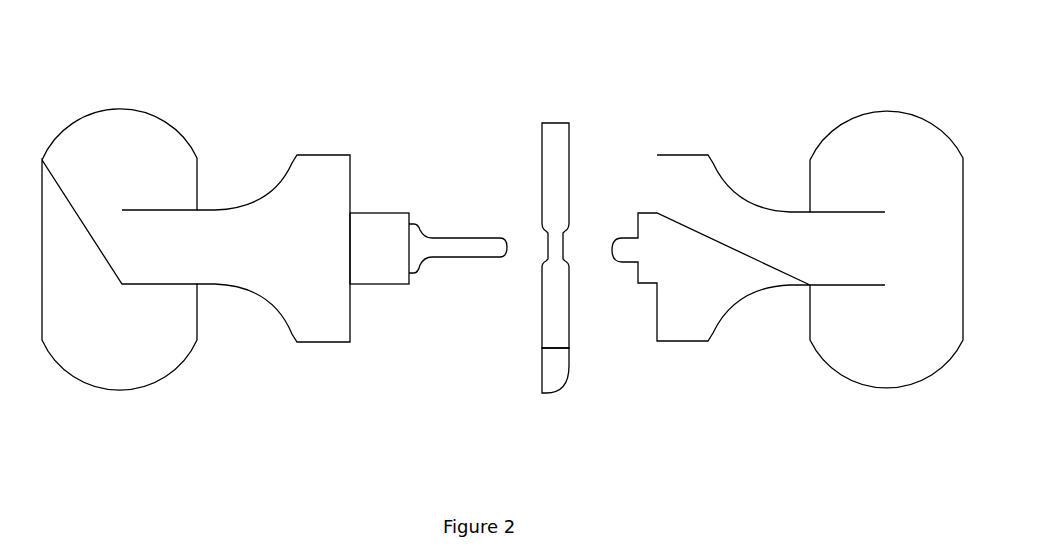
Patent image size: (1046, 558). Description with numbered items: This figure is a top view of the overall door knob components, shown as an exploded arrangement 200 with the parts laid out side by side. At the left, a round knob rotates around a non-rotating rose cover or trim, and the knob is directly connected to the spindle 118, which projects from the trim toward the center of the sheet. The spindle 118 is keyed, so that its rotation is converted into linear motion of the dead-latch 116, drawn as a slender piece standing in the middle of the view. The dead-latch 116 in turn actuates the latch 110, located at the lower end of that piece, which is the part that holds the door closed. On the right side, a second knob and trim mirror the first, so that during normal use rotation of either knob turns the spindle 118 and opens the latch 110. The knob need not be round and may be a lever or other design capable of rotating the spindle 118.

The spindle 118 is at (426, 233).
The dead-latch 116 is at (553, 173).
The latch 110 is at (536, 369).
The door knob assembly 200 is at (787, 196).